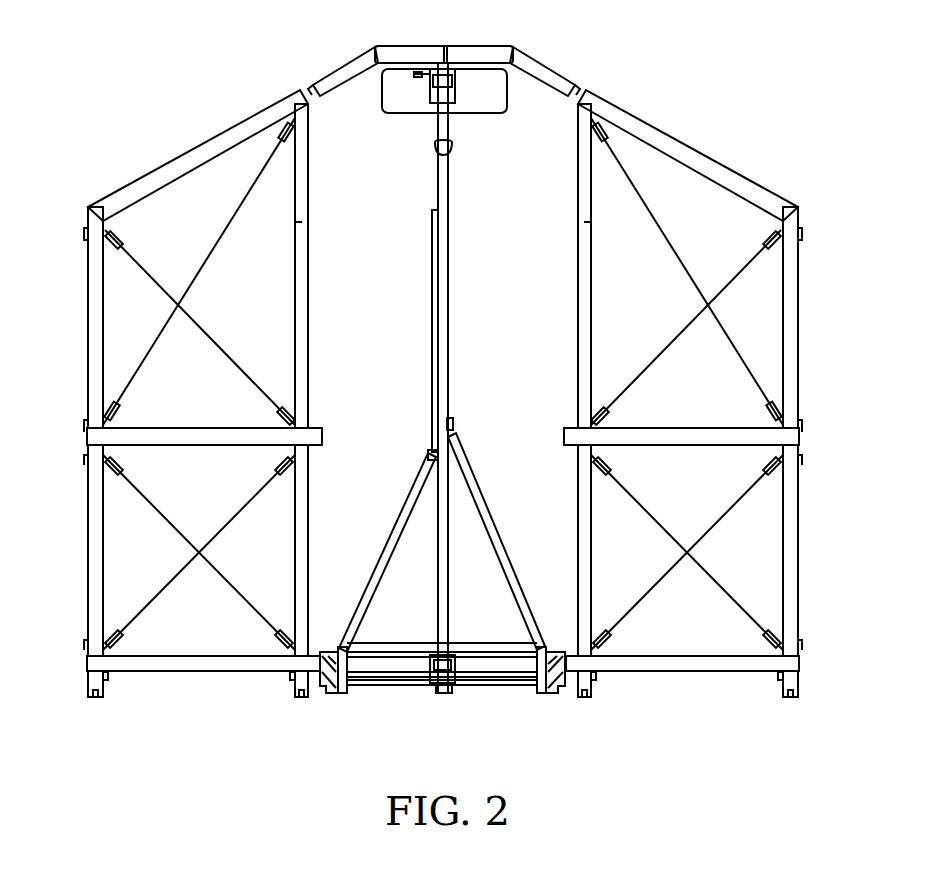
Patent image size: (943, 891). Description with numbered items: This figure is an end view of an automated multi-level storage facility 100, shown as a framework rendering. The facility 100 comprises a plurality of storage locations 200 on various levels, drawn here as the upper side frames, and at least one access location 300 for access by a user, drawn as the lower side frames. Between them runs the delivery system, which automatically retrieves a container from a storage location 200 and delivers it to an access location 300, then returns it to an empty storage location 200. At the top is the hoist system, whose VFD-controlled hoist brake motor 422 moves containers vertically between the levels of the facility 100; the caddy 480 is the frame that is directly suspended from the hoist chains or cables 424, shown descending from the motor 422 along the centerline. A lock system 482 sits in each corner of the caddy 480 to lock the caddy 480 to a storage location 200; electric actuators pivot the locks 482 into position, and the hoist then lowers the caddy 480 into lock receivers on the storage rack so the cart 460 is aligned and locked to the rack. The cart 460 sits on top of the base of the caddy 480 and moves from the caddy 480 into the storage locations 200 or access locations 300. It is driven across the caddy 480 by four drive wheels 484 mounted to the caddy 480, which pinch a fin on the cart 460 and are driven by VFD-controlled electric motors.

The automated multi-level storage facility 100 is at (648, 53).
The storage location 200 is at (118, 350).
The access location 300 is at (118, 557).
The hoist brake motor 422 is at (402, 107).
The hoist chains or cables 424 is at (442, 240).
The cart 460 is at (478, 678).
The caddy 480 is at (470, 483).
The lock system 482 is at (333, 640).
The drive wheels 484 is at (430, 655).